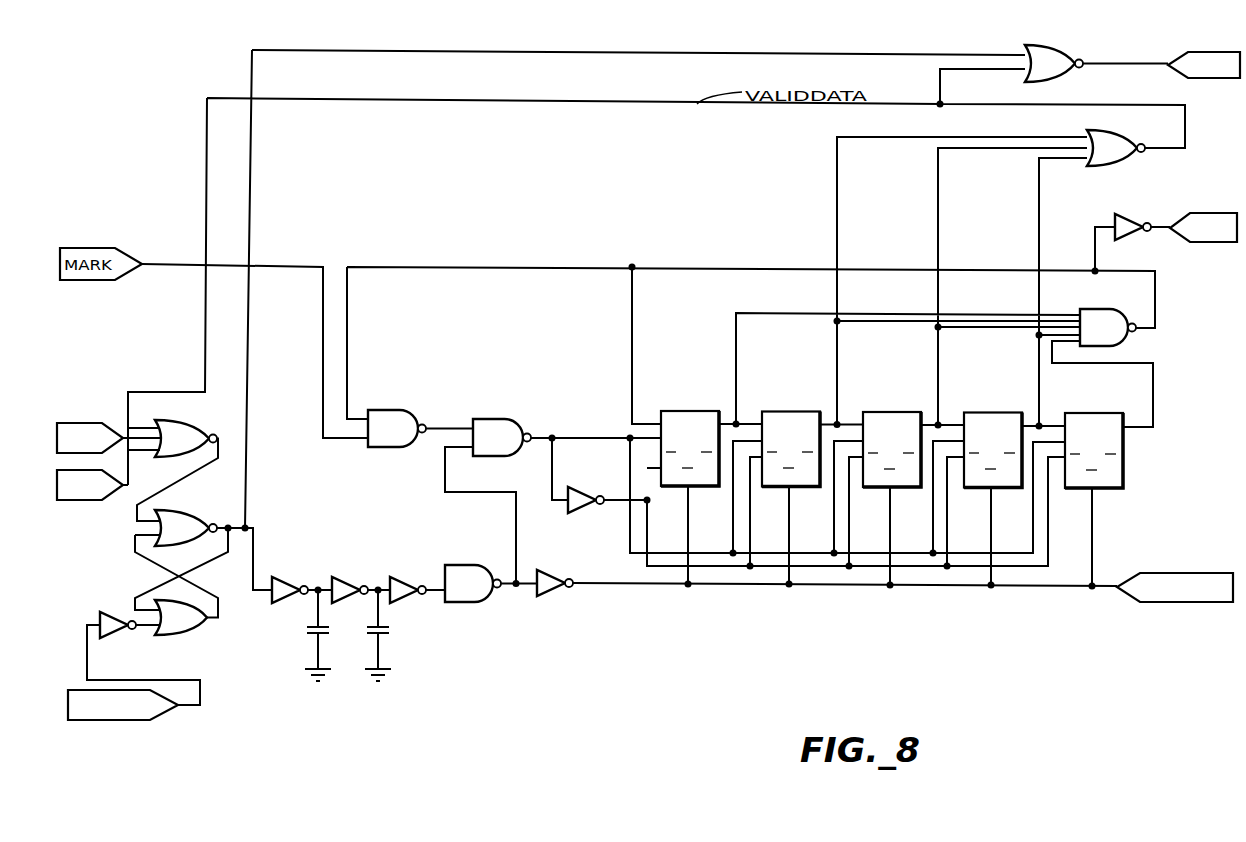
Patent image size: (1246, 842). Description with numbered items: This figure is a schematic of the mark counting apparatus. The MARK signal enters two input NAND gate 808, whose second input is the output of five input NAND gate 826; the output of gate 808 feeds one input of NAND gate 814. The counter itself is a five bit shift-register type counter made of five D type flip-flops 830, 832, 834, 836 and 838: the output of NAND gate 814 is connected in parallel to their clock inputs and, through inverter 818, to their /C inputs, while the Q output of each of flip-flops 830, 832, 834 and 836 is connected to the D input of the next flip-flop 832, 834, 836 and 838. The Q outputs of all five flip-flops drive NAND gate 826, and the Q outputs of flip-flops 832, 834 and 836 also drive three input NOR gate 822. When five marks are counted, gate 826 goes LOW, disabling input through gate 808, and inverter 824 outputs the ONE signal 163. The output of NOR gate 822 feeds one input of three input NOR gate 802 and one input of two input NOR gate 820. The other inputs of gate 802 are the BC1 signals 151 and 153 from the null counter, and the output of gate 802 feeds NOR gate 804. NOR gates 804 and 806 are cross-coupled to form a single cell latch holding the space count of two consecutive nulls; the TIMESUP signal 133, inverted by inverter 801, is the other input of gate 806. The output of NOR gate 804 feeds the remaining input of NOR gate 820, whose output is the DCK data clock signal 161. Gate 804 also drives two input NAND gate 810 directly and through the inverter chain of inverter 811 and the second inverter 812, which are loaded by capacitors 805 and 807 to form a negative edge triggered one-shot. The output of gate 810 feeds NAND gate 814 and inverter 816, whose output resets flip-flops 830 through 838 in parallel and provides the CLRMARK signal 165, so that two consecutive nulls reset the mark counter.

The TIMESUP signal 133 is at (203, 692).
The BC1 signal 151 is at (123, 428).
The BC1 signal 153 is at (123, 497).
The DCK signal 161 is at (1113, 60).
The ONE signal 163 is at (1160, 230).
The CLRMARK input 165 is at (1096, 590).
The inverter 801 is at (112, 640).
The three input NOR gate 802 is at (196, 421).
The NOR gate 804 is at (186, 510).
The capacitor 805 is at (327, 683).
The two input NOR gate 806 is at (182, 637).
The capacitor 807 is at (388, 683).
The two input NAND gate 808 is at (396, 410).
The two input NAND gate 810 is at (460, 565).
The inverter 811 is at (285, 578).
The inverter 812 is at (345, 578).
The NAND gate 814 is at (498, 419).
The inverter 816 is at (548, 598).
The inverter 818 is at (578, 514).
The two input NOR gate 820 is at (1068, 76).
The three input NOR gate 822 is at (1136, 158).
The inverter 824 is at (1131, 214).
The five input NAND gate 826 is at (1099, 309).
The D type flip-flop 830 is at (677, 411).
The D type flip-flop 832 is at (778, 411).
The D type flip-flop 834 is at (879, 412).
The D type flip-flop 836 is at (980, 412).
The D type flip-flop 838 is at (1081, 413).